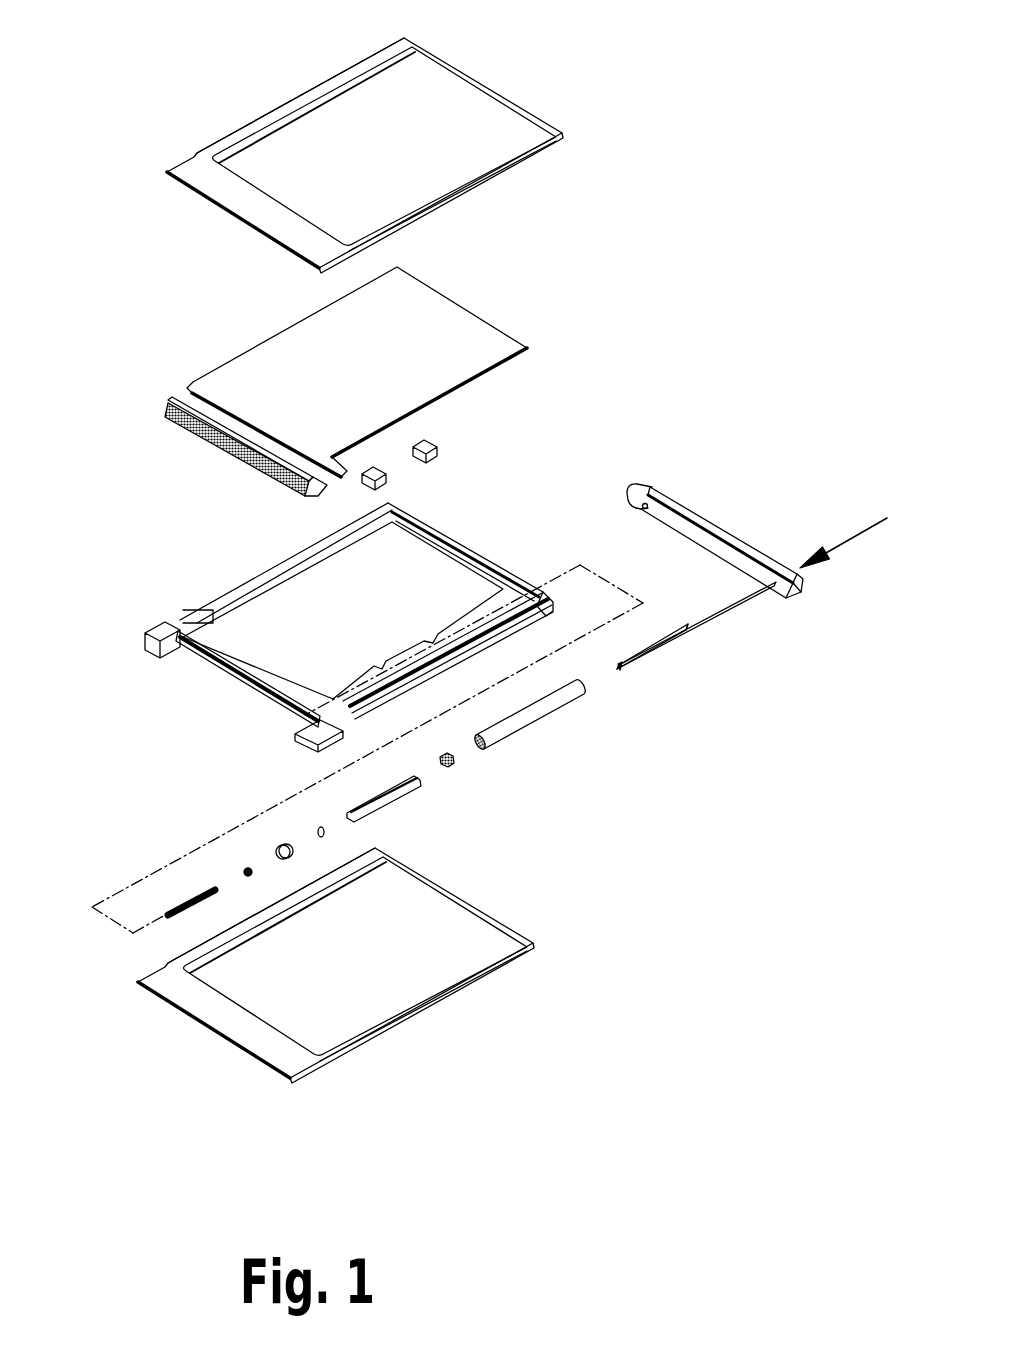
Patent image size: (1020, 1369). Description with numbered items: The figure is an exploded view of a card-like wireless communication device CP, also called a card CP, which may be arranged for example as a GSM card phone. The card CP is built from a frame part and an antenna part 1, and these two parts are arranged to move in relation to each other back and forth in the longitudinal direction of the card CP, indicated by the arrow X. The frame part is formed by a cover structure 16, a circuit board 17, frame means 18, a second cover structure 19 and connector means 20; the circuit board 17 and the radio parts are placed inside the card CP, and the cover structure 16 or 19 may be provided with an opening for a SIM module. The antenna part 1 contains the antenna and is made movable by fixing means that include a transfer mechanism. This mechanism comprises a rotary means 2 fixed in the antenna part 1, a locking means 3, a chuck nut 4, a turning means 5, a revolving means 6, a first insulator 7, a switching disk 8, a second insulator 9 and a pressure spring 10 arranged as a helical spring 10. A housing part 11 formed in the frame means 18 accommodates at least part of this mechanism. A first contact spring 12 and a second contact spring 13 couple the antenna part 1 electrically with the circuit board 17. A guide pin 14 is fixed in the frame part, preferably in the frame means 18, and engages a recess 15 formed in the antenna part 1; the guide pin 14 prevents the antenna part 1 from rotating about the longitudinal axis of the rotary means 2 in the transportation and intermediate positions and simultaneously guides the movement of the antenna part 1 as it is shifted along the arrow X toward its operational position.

The card-like wireless communication device CP is at (228, 49).
The antenna part 1 is at (687, 517).
The rotary means 2 is at (657, 647).
The locking means 3 is at (688, 627).
The chuck nut 4 is at (557, 703).
The turning means 5 is at (455, 760).
The revolving means 6 is at (415, 785).
The first insulator 7 is at (325, 832).
The switching disk 8 is at (280, 847).
The second insulator 9 is at (248, 872).
The pressure spring 10 is at (170, 907).
The housing part 11 is at (350, 692).
The first contact spring 12 is at (383, 478).
The second contact spring 13 is at (430, 443).
The guide pin 14 is at (390, 508).
The recess 15 is at (660, 490).
The cover structure 16 is at (493, 112).
The circuit board 17 is at (453, 332).
The frame means 18 is at (273, 610).
The cover structure 19 is at (453, 913).
The connector means 20 is at (185, 402).
The arrow X is at (867, 530).